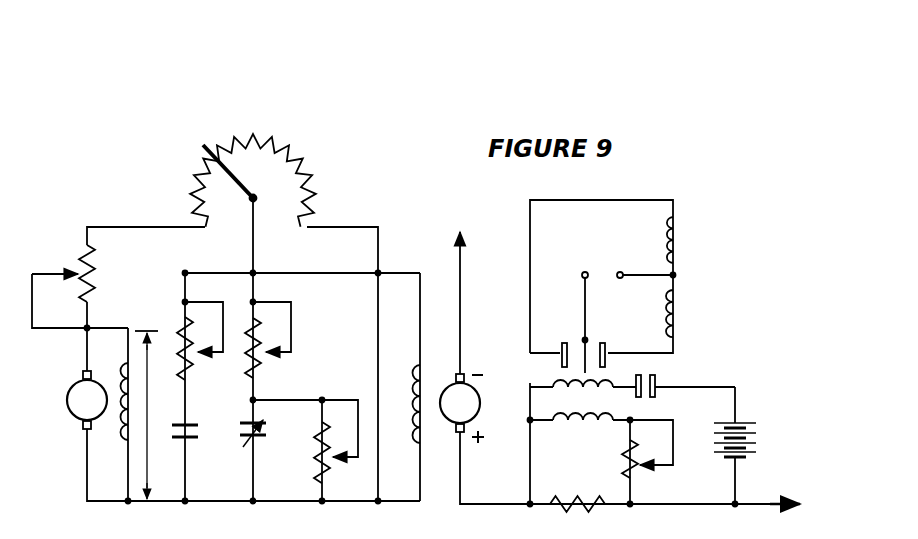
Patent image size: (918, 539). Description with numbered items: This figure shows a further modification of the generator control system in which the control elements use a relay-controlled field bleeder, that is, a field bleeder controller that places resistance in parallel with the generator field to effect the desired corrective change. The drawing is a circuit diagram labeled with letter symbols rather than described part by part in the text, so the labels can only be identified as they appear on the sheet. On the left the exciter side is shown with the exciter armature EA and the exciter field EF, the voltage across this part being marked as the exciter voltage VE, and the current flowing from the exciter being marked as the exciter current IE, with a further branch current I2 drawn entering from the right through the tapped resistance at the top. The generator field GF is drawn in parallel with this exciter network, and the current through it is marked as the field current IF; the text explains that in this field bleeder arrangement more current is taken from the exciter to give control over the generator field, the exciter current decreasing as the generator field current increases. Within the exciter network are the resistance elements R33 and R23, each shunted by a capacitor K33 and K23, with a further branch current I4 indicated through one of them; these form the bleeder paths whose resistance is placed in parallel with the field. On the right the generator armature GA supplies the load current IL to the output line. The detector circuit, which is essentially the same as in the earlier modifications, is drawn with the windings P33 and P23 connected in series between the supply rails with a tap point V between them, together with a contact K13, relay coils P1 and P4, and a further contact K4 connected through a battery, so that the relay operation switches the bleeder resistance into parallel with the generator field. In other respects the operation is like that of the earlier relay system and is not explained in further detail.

The exciter armature EA is at (87, 400).
The exciter field winding EF is at (124, 424).
The exciter voltage VE is at (146, 415).
The exciter current IE is at (177, 218).
The current I2 is at (352, 218).
The field current IF is at (411, 298).
The generator field winding GF is at (414, 406).
The resistor R33 is at (194, 374).
The resistor R23 is at (262, 374).
The current I4 is at (193, 390).
The capacitor K33 is at (191, 445).
The variable capacitor K23 is at (256, 450).
The generator armature GA is at (460, 403).
The load current IL is at (467, 455).
The potentiometer winding P33 is at (678, 238).
The potentiometer winding P23 is at (678, 330).
The voltage tap V is at (627, 319).
The contact K13 is at (605, 343).
The relay coil P1 is at (590, 387).
The relay coil P4 is at (582, 428).
The contact K4 is at (655, 393).